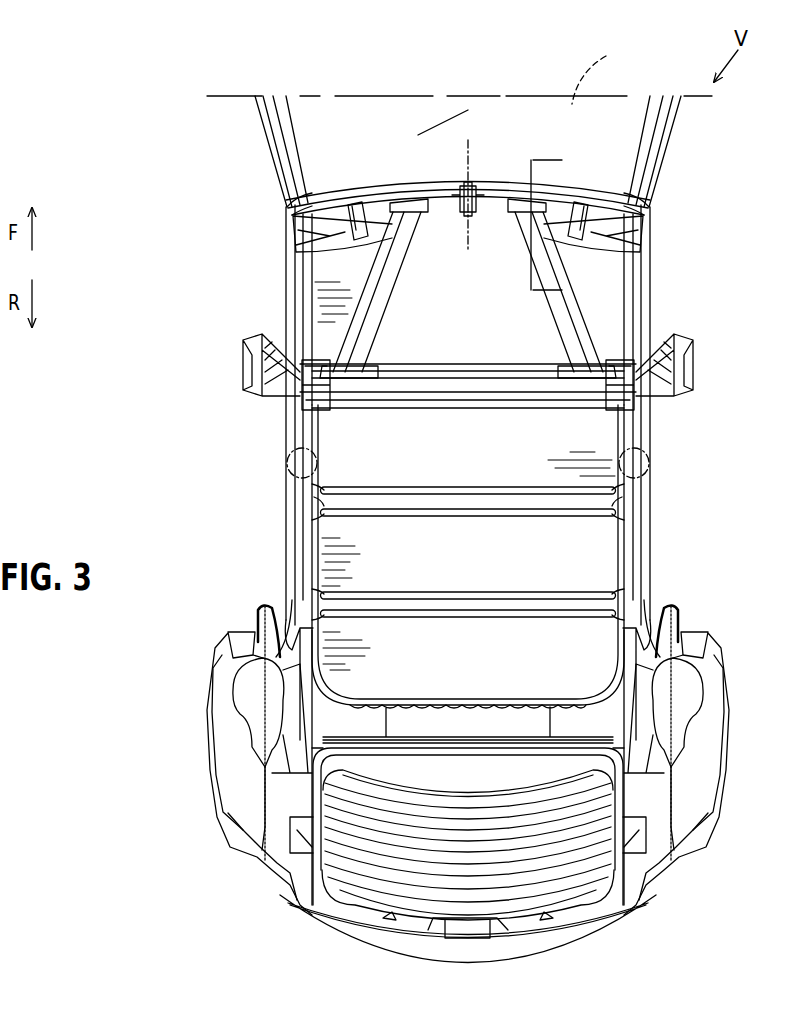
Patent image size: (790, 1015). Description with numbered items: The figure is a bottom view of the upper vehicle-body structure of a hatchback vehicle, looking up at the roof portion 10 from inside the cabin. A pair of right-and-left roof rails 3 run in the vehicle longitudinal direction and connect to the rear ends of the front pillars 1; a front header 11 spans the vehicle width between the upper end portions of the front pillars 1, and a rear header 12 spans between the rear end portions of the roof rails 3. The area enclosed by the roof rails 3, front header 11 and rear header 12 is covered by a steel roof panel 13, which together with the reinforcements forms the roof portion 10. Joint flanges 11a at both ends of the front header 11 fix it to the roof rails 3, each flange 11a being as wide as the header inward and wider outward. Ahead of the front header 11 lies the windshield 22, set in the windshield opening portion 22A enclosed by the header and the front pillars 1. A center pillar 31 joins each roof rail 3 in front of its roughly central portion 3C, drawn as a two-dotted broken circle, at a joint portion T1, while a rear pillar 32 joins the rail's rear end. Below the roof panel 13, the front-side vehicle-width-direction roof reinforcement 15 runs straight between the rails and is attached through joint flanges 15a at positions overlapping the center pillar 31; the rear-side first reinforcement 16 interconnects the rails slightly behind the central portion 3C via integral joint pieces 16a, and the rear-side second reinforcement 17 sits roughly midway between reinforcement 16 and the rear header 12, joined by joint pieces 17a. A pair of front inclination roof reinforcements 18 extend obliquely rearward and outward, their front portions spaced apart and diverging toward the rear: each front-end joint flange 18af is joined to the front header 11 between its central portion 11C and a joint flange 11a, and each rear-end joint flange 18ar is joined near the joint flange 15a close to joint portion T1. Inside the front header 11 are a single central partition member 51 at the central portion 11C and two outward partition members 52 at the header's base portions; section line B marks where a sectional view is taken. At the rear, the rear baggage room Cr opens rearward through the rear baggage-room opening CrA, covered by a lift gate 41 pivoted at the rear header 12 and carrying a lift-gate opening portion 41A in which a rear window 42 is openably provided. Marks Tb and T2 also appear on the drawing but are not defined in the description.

The front pillar 1 is at (262, 150).
The roof rail 3 is at (284, 548).
The central portion of roof rail 3C is at (286, 465).
The roof portion 10 is at (692, 440).
The front header 11 is at (394, 178).
The joint flange 11a is at (330, 185).
The central portion of front header 11C is at (458, 181).
The rear header 12 is at (412, 700).
The roof panel 13 is at (630, 548).
The front-side vehicle-width-direction roof reinforcement 15 is at (474, 410).
The joint flange 15a is at (340, 408).
The rear-side first vehicle-width-direction roof reinforcement 16 is at (474, 516).
The joint piece 16a is at (302, 491).
The rear-side second vehicle-width-direction roof reinforcement 17 is at (474, 614).
The joint piece 17a is at (302, 594).
The front inclination roof reinforcement 18 is at (385, 300).
The front-end joint flange 18af is at (436, 214).
The rear-end joint flange 18ar is at (378, 368).
The windshield 22 is at (602, 69).
The windshield opening portion 22A is at (368, 104).
The center pillar 31 is at (268, 336).
The rear pillar 32 is at (262, 612).
The lift gate 41 is at (505, 945).
The lift-gate opening portion 41A is at (592, 902).
The rear window 42 is at (558, 905).
The central partition member 51 is at (480, 180).
The outward partition member 52 is at (366, 228).
The section line B- B is at (543, 216).
The bolt Tb is at (382, 190).
The joint portion T1 is at (282, 402).
The joint T2 is at (270, 233).
The rear baggage room Cr is at (482, 684).
The rear baggage-room opening CrA is at (360, 922).